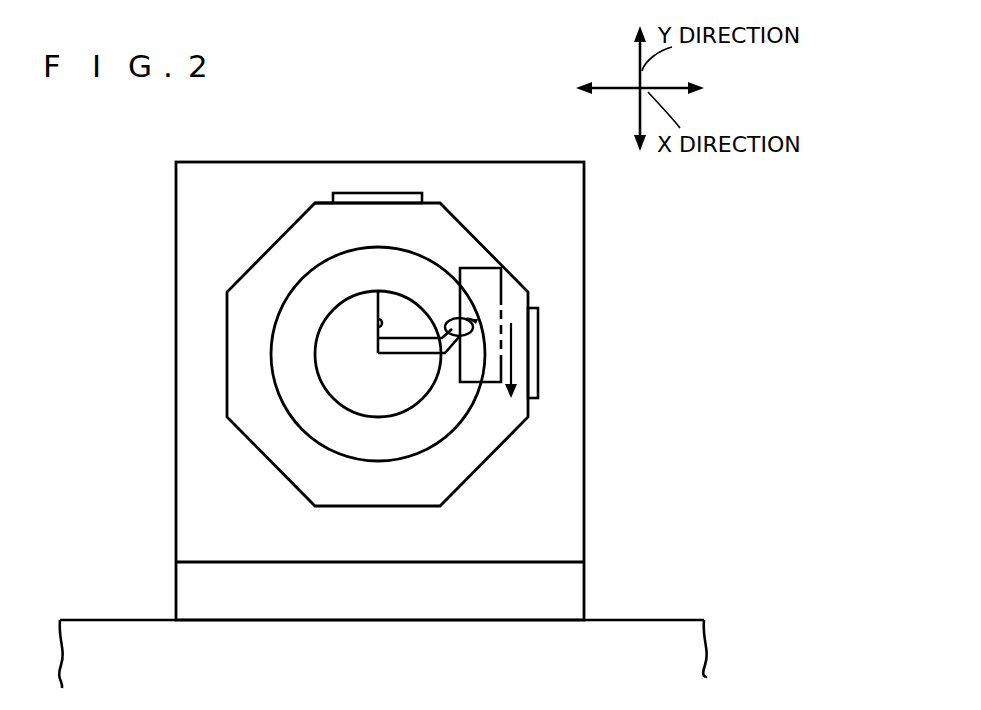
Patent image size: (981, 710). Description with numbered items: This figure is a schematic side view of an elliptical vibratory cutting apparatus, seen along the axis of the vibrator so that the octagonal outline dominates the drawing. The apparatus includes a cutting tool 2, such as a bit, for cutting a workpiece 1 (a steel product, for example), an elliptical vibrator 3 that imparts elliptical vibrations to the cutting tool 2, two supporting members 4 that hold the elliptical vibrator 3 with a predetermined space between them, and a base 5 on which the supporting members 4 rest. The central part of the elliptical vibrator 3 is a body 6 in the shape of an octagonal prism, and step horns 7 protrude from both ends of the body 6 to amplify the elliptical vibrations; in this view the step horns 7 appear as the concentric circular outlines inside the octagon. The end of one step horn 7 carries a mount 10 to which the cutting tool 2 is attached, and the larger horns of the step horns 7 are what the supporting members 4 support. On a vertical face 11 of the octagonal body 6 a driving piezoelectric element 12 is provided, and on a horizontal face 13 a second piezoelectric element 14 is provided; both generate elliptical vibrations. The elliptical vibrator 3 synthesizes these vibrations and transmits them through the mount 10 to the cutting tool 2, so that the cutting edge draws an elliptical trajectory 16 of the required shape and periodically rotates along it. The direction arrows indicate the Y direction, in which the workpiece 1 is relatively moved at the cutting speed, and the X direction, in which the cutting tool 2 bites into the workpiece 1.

The workpiece 1 is at (492, 287).
The cutting tool 2 is at (412, 348).
The elliptical vibrator 3 is at (110, 223).
The supporting member 4 is at (218, 482).
The base 5 is at (643, 652).
The body 6 is at (263, 253).
The step horn 7 is at (289, 296).
The mount 10 is at (378, 328).
The vertical face 11 is at (528, 408).
The piezoelectric element 12 is at (535, 355).
The horizontal face 13 is at (323, 203).
The piezoelectric element 14 is at (378, 193).
The trajectory 16 is at (451, 319).